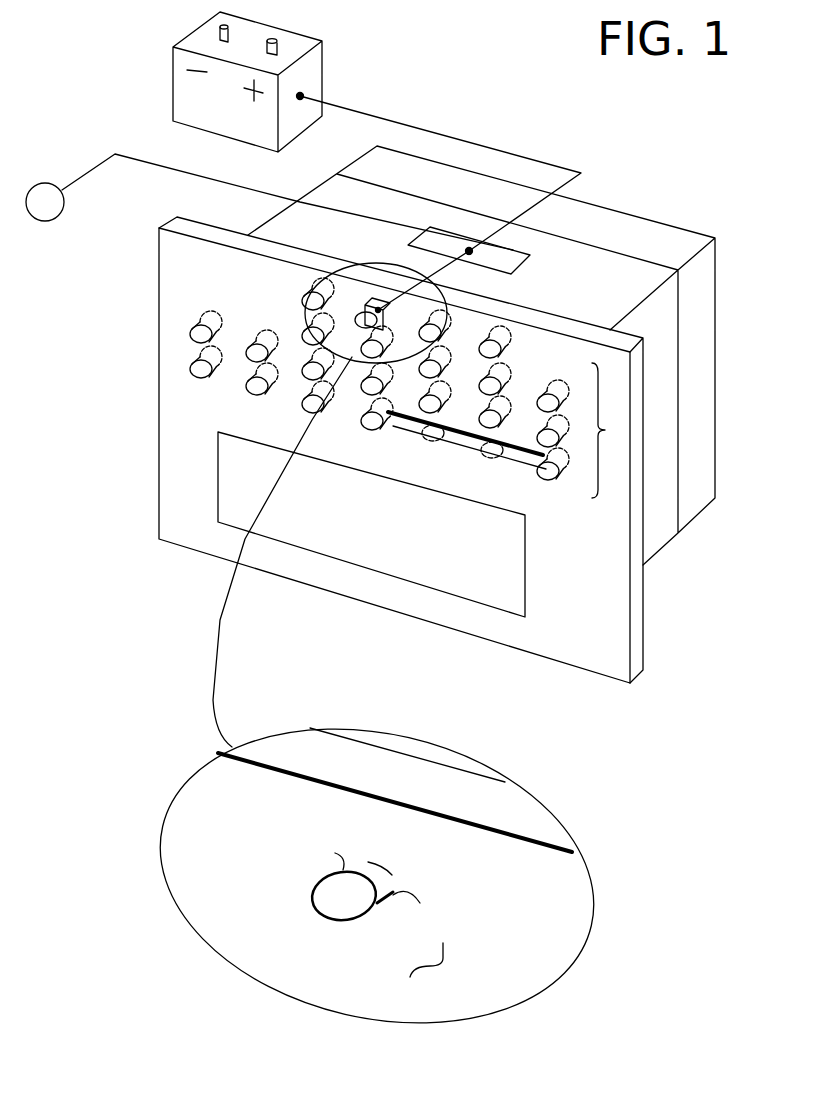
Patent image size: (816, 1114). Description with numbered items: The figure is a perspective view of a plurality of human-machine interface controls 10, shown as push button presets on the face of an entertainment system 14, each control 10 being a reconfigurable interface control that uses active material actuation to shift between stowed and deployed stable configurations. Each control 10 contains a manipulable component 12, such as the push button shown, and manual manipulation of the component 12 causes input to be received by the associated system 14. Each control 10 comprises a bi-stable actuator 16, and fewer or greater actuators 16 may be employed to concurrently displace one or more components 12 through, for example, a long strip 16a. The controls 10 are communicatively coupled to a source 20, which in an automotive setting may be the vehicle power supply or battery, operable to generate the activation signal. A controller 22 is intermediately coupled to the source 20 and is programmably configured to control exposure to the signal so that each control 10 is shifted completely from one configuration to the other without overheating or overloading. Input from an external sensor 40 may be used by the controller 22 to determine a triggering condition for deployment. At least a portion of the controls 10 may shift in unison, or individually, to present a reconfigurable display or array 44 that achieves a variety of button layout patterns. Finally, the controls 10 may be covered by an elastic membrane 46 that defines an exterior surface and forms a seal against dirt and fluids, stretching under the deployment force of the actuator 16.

The reconfigurable interface control 10 is at (303, 300).
The manipulable component 12 is at (200, 370).
The entertainment system 14 is at (575, 299).
The actuator 16 is at (202, 353).
The long strip 16a is at (522, 458).
The source 20 is at (180, 62).
The controller 22 is at (469, 251).
The external sensor 40 is at (35, 195).
The reconfigurable display 44 is at (605, 430).
The elastic membrane 46 is at (425, 963).